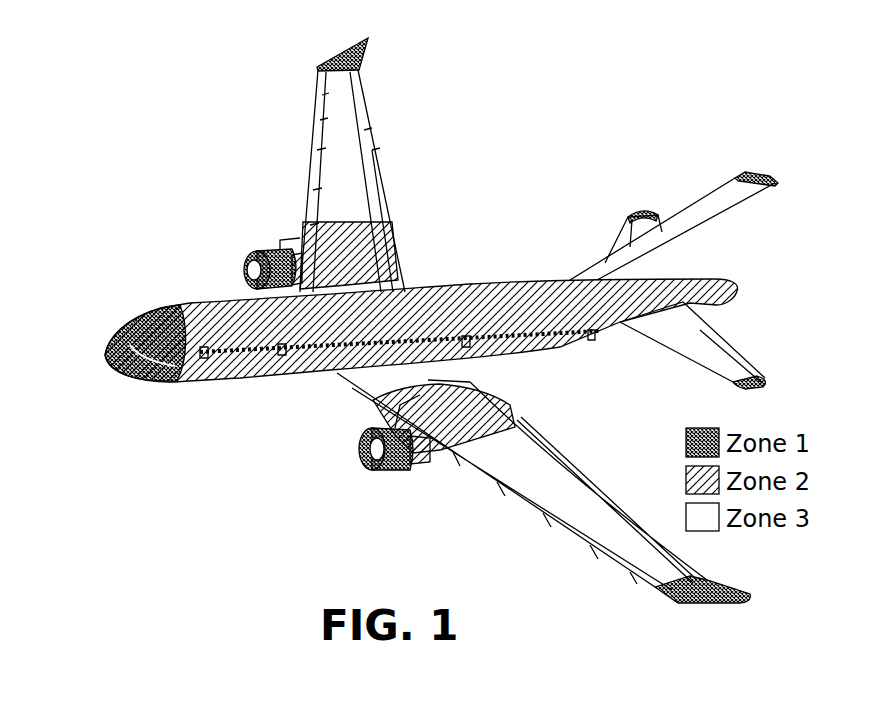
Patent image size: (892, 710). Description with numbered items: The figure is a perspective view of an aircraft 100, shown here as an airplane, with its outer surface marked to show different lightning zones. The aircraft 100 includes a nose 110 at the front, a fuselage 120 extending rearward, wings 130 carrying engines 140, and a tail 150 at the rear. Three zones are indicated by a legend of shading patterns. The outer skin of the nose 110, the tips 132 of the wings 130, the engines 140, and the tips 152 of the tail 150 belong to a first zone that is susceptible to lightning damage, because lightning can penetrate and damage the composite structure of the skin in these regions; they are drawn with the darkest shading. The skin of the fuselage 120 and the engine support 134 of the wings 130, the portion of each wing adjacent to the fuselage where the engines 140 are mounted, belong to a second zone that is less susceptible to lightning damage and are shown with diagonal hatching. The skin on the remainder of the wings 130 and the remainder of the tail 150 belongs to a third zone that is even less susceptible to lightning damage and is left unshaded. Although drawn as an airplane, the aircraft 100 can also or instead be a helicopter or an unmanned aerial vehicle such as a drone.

The aircraft 100 is at (192, 126).
The nose 110 is at (103, 357).
The fuselage 120 is at (483, 283).
The wings 130 is at (372, 140).
The tips of the wings 132 is at (368, 40).
The engine support 134 is at (397, 250).
The engines 140 is at (250, 256).
The tail 150 is at (738, 232).
The tips of the tail 152 is at (640, 212).